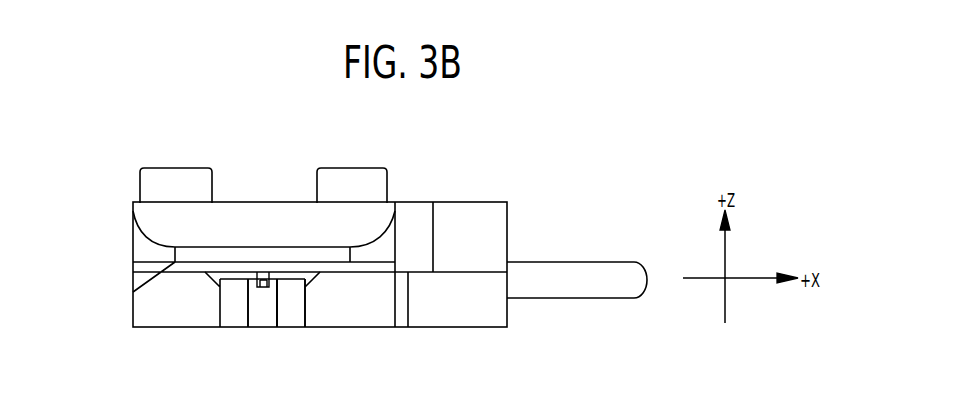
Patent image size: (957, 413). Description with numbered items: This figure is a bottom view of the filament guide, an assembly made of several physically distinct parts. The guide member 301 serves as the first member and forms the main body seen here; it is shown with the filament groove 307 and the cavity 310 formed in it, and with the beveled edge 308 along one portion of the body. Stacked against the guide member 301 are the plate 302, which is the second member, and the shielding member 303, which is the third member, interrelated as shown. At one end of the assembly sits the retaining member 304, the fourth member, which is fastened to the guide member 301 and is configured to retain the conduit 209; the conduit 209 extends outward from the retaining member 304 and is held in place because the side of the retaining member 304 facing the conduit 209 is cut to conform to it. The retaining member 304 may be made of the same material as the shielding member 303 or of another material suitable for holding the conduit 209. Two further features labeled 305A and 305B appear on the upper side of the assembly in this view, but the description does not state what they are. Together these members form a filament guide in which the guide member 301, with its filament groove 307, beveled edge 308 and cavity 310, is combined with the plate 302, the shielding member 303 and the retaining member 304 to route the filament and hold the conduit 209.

The guide member 301 is at (145, 313).
The plate 302 is at (175, 268).
The shielding member 303 is at (148, 223).
The retaining member 304 is at (478, 212).
The contact pad 305A is at (175, 178).
The contact pad 305B is at (352, 178).
The filament groove 307 is at (262, 283).
The beveled edge 308 is at (307, 283).
The cavity 310 is at (262, 312).
The conduit 209 is at (620, 262).